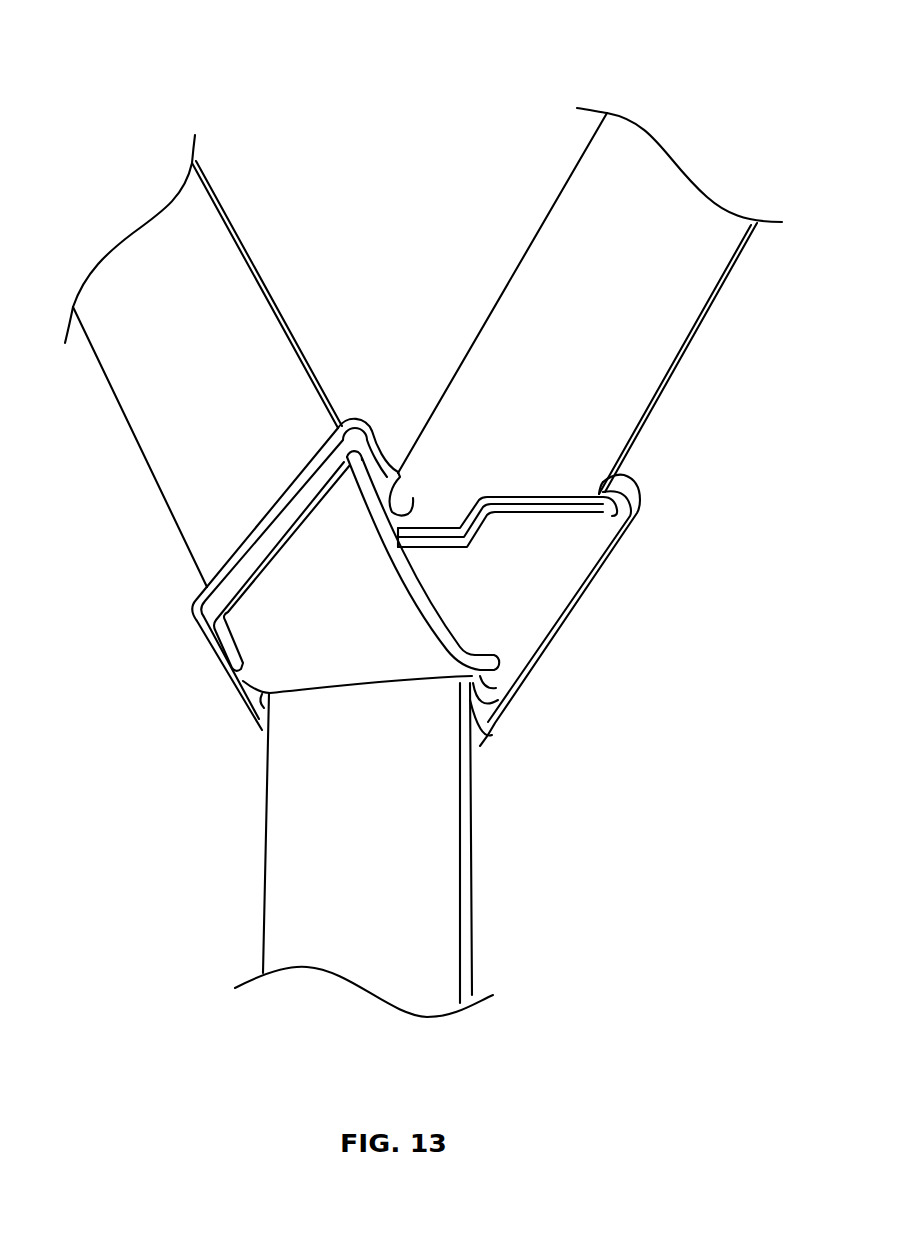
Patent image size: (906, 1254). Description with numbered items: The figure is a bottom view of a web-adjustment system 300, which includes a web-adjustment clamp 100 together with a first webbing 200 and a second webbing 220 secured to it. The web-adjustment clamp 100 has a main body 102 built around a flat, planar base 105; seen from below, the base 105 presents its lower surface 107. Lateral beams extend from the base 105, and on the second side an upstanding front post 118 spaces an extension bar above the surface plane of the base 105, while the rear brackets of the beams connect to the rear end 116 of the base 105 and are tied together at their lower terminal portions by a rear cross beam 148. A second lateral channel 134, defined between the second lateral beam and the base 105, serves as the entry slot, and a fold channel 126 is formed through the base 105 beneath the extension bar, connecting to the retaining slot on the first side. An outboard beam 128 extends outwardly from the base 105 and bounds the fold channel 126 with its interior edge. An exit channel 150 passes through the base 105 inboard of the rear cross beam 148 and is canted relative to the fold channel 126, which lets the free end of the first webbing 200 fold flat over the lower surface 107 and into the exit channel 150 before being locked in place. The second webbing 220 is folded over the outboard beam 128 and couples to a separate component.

The web-adjustment system 300 is at (762, 54).
The first webbing 200 is at (263, 273).
The second webbing 220 is at (440, 893).
The web-adjustment clamp 100 is at (586, 630).
The main body 102 is at (245, 591).
The base 105 is at (578, 578).
The lower surface 107 is at (511, 626).
The rear end 116 is at (233, 707).
The front post 118 is at (639, 500).
The fold channel 126 is at (487, 689).
The outboard beam 128 is at (477, 737).
The second lateral channel 134 is at (612, 482).
The rear cross beam 148 is at (207, 583).
The exit channel 150 is at (352, 448).